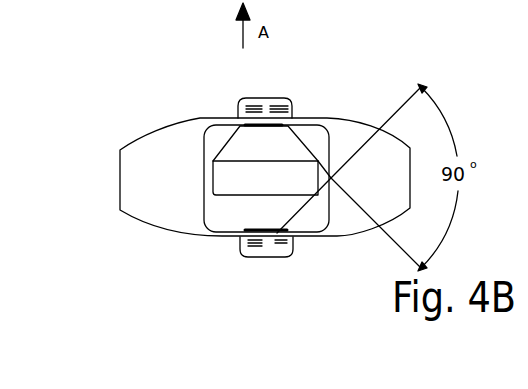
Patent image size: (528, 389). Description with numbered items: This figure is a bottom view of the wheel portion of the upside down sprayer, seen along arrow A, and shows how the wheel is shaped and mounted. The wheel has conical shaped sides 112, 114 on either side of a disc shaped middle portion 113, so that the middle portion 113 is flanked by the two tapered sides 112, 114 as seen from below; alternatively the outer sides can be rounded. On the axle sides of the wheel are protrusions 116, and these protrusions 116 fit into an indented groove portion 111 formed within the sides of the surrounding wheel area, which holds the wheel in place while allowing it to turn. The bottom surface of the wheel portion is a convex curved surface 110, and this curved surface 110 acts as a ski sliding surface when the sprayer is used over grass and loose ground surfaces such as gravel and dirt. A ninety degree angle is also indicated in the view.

The convex curved bottom surface 110 is at (160, 195).
The indented groove portion 111 is at (275, 98).
The conical shaped side 112 is at (245, 143).
The disc shaped middle portion 113 is at (240, 178).
The conical shaped side 114 is at (216, 197).
The protrusions 116 is at (279, 233).